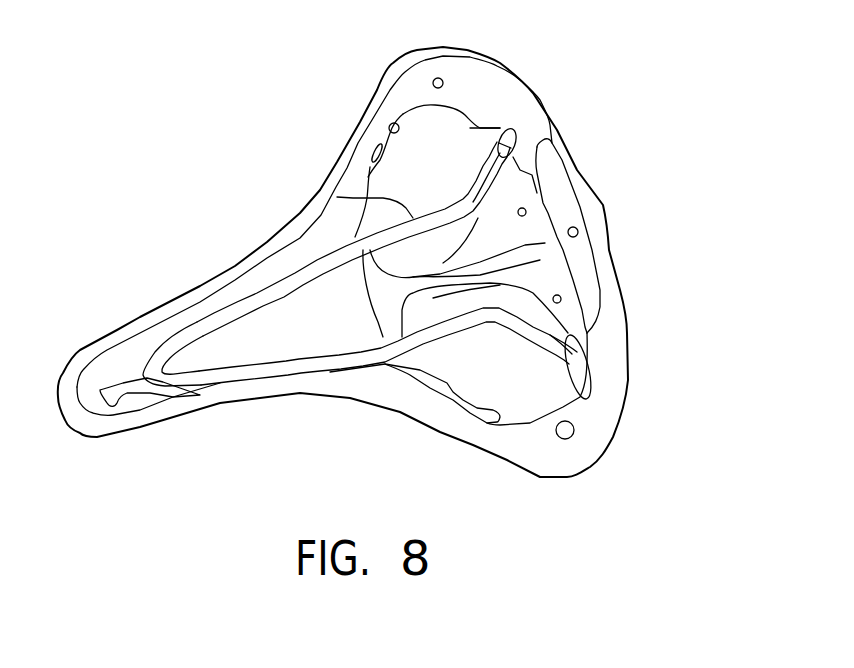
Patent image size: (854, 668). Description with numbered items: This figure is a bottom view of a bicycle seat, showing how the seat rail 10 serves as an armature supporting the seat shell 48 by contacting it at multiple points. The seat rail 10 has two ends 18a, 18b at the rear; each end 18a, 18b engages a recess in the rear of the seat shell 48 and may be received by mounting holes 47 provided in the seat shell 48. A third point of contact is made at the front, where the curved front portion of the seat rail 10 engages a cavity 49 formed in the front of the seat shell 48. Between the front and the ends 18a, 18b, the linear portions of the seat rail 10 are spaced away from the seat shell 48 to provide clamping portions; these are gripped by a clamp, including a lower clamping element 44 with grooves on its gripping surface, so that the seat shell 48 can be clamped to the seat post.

The seat rail 10 is at (337, 197).
The end of the seat rail 18a is at (497, 143).
The end of the seat rail 18b is at (563, 350).
The lower clamping element 44 is at (590, 347).
The mounting holes 47 is at (505, 132).
The seat shell 48 is at (557, 125).
The cavity 49 is at (137, 378).